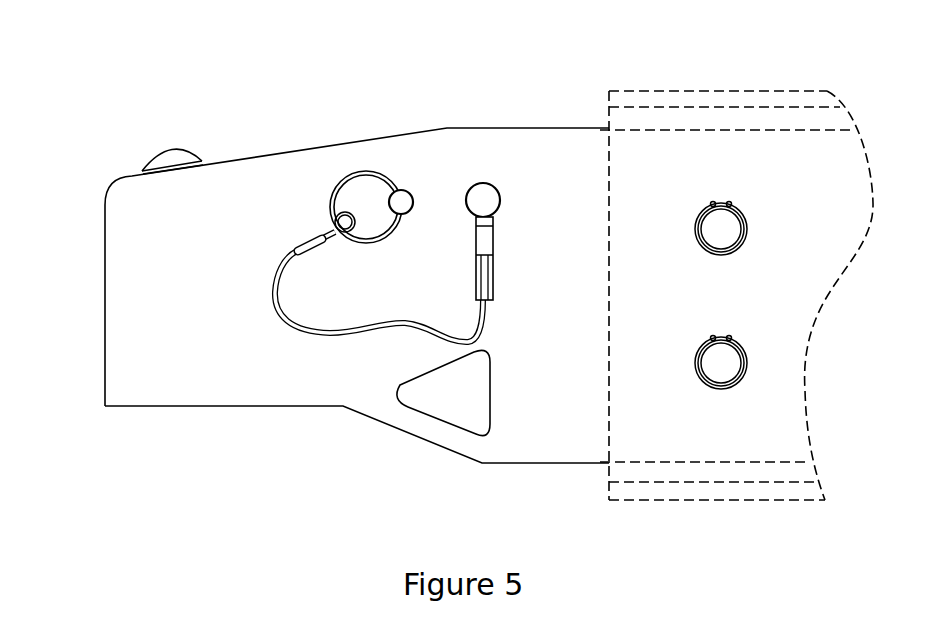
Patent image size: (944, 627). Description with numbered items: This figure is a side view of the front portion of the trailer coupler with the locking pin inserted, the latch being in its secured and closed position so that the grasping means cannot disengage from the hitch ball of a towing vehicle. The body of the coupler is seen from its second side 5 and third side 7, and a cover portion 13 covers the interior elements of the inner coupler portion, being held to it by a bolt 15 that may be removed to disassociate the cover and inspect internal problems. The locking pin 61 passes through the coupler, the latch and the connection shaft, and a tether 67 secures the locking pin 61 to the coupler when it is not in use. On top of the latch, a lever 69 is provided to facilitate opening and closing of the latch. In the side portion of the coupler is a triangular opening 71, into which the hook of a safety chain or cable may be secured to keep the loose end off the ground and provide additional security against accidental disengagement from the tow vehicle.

The second side 5 is at (93, 252).
The third side 7 is at (262, 372).
The cover portion 13 is at (713, 90).
The bolt 15 is at (712, 217).
The locking pin 61 is at (398, 206).
The tether 67 is at (493, 268).
The lever 69 is at (177, 156).
The triangular opening 71 is at (443, 405).